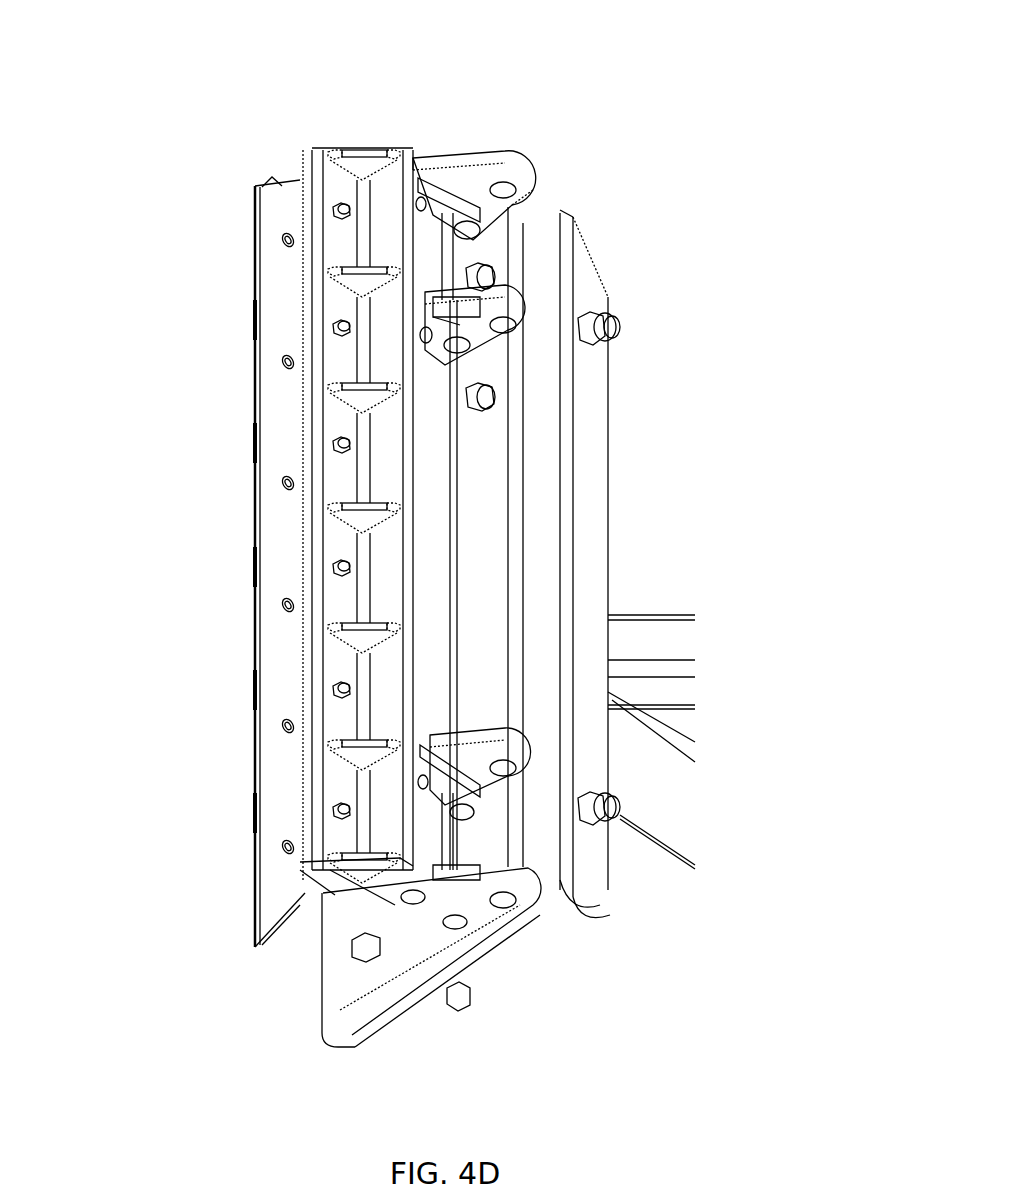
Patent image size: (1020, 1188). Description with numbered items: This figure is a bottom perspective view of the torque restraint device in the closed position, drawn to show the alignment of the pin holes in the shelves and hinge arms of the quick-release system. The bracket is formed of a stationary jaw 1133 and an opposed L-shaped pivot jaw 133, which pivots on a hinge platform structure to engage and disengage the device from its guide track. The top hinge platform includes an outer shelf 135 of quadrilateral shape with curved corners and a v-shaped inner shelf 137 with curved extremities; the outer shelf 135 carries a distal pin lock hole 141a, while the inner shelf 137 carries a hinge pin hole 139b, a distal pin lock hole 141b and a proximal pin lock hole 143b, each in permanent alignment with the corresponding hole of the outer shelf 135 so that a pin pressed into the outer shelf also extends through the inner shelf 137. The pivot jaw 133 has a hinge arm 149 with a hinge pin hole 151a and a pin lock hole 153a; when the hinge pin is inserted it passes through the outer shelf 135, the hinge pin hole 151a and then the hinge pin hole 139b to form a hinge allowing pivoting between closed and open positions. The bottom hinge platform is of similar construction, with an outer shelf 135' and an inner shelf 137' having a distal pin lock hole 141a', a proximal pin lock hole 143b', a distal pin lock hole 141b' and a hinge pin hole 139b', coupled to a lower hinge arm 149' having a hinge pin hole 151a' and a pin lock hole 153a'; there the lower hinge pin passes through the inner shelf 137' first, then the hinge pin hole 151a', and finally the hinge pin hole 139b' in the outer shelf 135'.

The stationary jaw 1133 is at (256, 525).
The pivot jaw 133 is at (338, 662).
The hinge arm 149 is at (312, 230).
The hinge pin hole 151a is at (339, 131).
The outer shelf 135 is at (476, 128).
The distal pin lock hole 141a is at (584, 134).
The pin lock hole 153a is at (615, 194).
The inner shelf 137 is at (557, 303).
The distal pin lock hole 141b is at (614, 366).
The hinge pin hole 139b is at (591, 422).
The proximal pin lock hole 143b is at (273, 362).
The hinge pin hole 151a' is at (247, 716).
The lower hinge arm 149' is at (300, 807).
The inner shelf 137' is at (607, 738).
The distal pin lock hole 141a' is at (653, 817).
The pin lock hole 153a' is at (576, 894).
The outer shelf 135' is at (387, 967).
The proximal pin lock hole 143b' is at (254, 885).
The distal pin lock hole 141b' is at (616, 983).
The hinge pin hole 139b' is at (530, 1012).